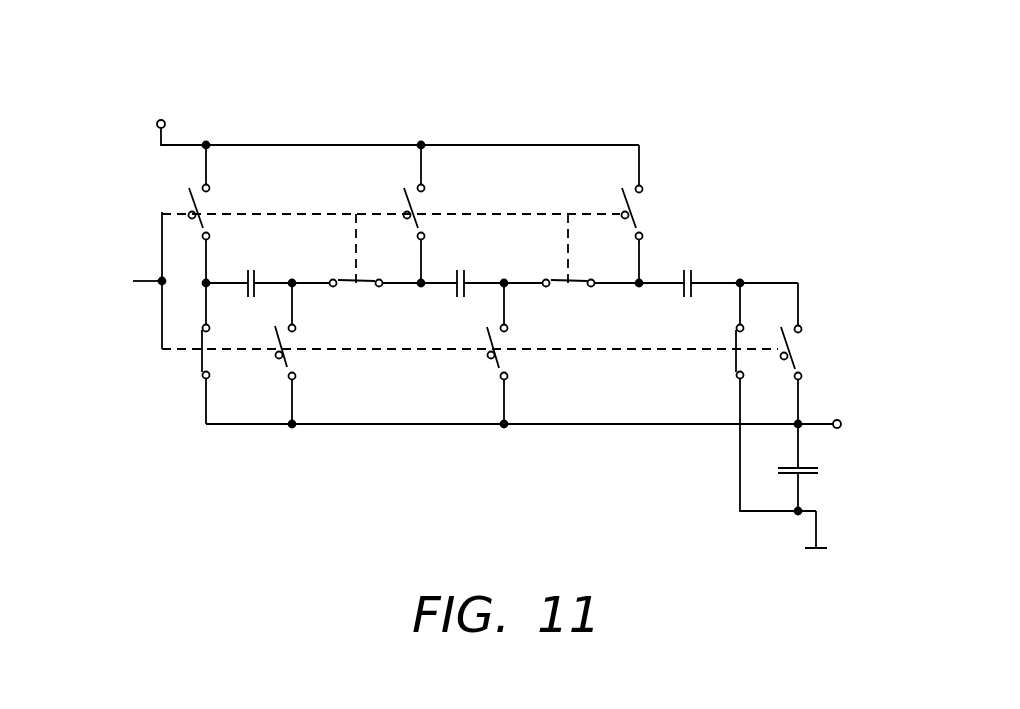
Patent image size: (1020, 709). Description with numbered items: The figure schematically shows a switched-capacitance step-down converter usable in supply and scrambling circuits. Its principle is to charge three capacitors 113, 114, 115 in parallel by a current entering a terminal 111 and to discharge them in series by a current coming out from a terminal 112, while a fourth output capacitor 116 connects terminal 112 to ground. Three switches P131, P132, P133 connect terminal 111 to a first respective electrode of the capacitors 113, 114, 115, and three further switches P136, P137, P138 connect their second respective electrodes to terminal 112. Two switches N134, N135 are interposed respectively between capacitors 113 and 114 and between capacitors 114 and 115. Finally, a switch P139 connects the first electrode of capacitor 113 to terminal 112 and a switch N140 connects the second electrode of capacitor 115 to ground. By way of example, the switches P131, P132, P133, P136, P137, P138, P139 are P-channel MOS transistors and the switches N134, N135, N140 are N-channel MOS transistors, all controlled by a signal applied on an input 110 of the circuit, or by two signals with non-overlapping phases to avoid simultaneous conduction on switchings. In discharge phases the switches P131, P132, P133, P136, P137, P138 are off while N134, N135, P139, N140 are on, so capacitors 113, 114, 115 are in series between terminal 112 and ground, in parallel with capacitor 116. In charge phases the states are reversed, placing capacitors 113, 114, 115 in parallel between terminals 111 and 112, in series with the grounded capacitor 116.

The input 110 is at (150, 278).
The terminal 111 is at (165, 122).
The terminal 112 is at (840, 420).
The capacitor 113 is at (258, 272).
The capacitor 114 is at (468, 272).
The capacitor 115 is at (695, 272).
The output capacitor 116 is at (812, 468).
The switch P131 is at (198, 216).
The switch P132 is at (412, 218).
The switch P133 is at (630, 218).
The switch N134 is at (352, 285).
The switch N135 is at (574, 285).
The switch P136 is at (284, 366).
The switch P137 is at (496, 367).
The switch P138 is at (791, 358).
The switch P139 is at (200, 362).
The switch N140 is at (735, 367).